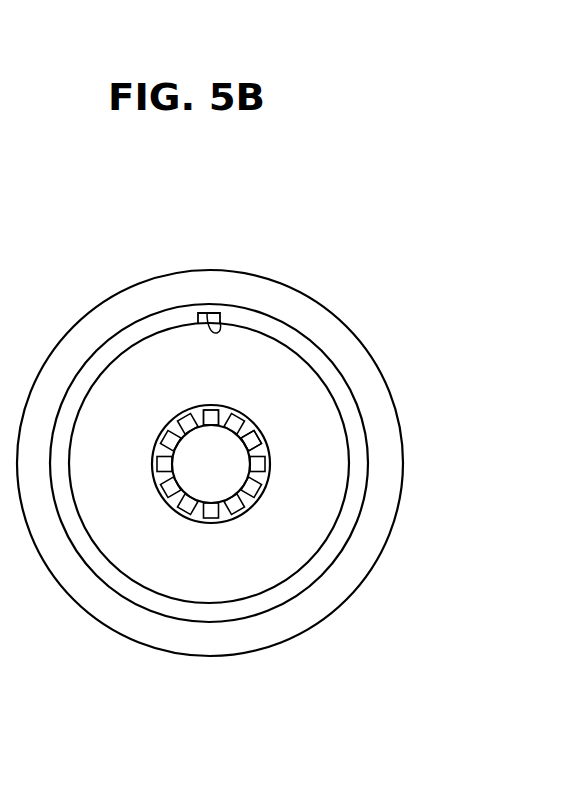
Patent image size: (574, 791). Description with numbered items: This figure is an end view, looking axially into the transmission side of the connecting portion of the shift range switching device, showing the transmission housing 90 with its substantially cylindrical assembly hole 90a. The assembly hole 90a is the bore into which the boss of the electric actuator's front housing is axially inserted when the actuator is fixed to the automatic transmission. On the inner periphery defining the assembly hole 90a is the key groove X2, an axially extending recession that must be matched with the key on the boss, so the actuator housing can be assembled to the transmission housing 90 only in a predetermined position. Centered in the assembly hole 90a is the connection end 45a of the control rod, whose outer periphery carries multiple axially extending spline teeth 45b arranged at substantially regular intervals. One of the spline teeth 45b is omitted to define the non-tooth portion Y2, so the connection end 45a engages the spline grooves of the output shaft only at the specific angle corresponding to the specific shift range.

The transmission housing 90 is at (130, 270).
The assembly hole 90a is at (126, 557).
The connection end 45a is at (212, 485).
The spline teeth 45b is at (265, 460).
The key groove X2 is at (205, 410).
The non-tooth portion Y2 is at (235, 417).